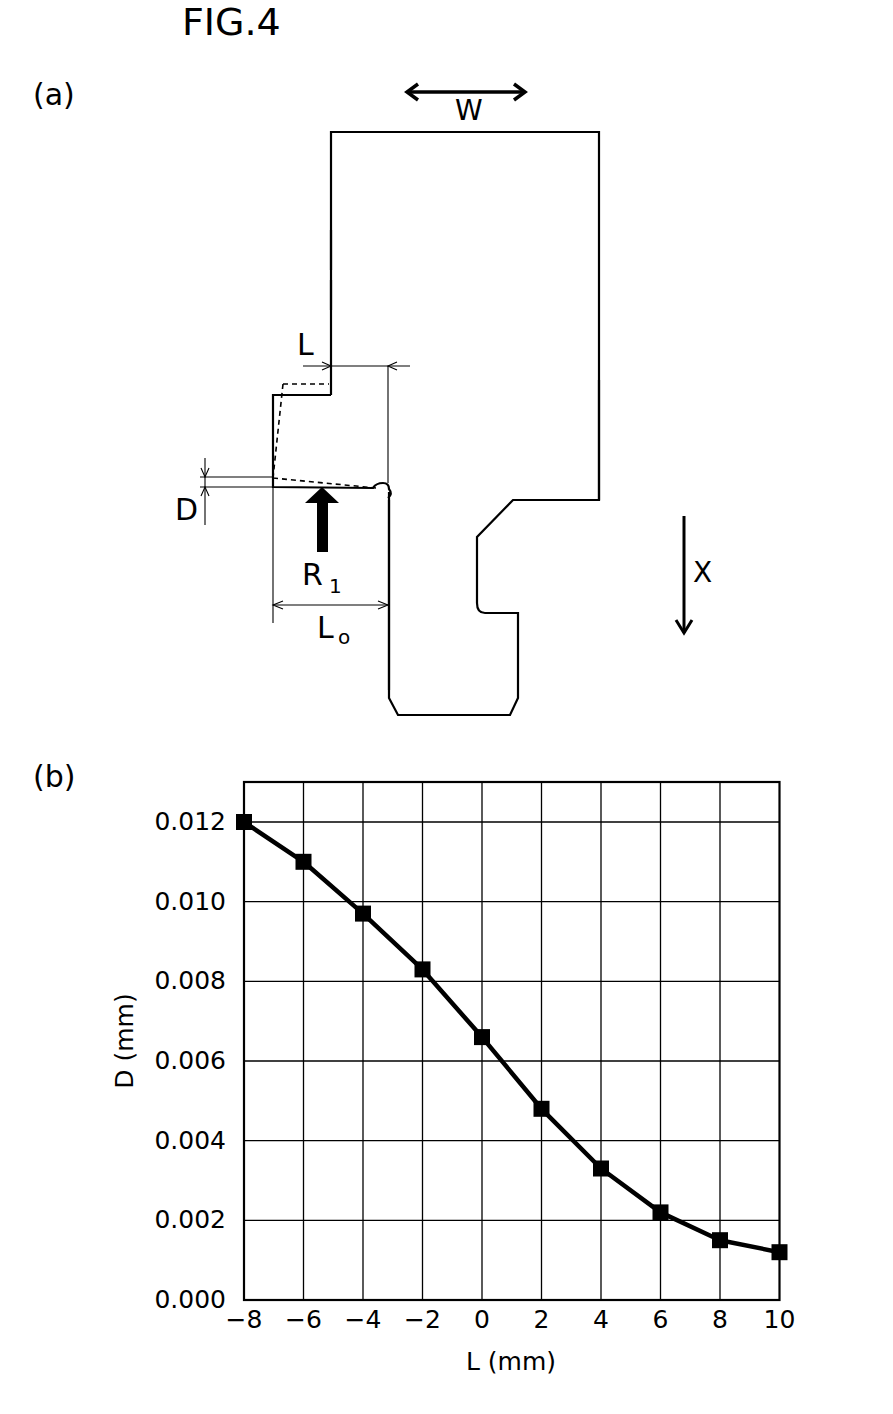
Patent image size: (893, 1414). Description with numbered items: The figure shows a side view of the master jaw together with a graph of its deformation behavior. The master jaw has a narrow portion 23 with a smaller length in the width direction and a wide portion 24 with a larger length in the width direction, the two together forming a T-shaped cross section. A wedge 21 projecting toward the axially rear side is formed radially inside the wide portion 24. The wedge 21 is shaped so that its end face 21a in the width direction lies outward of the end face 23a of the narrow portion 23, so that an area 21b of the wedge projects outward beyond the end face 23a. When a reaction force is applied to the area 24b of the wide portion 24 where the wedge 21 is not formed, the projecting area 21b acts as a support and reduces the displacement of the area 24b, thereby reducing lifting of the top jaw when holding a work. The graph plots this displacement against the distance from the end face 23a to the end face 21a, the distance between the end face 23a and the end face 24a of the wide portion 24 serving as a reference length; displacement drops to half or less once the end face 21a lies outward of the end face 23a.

The wedge 21 is at (577, 243).
The end face of the wedge in the width direction 21a is at (331, 250).
The area projecting outward in the width direction 21b is at (360, 291).
The wide portion 24 is at (577, 444).
The end face of the wide portion in the width direction 24a is at (273, 437).
The area where the wedge is not formed 24b is at (302, 422).
The narrow portion 23 is at (493, 663).
The end face of the narrow portion in the width direction 23a is at (388, 652).